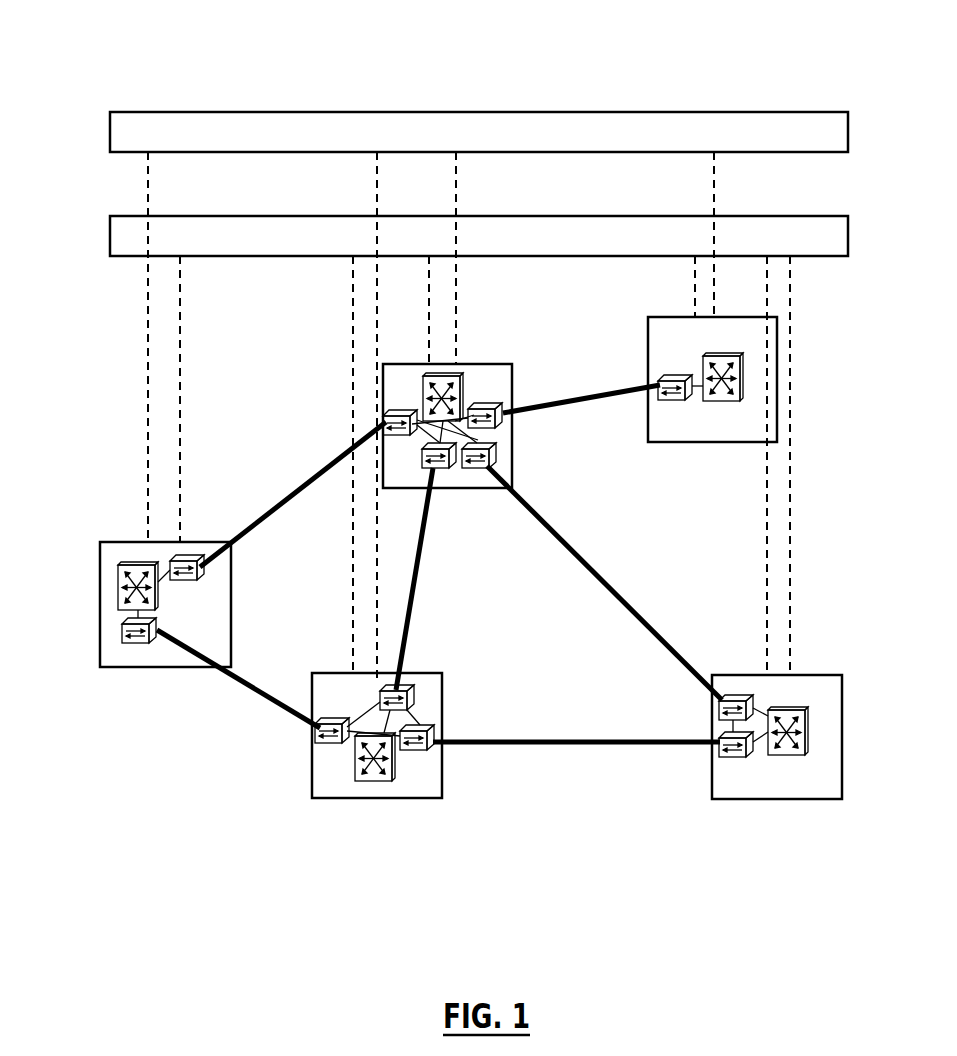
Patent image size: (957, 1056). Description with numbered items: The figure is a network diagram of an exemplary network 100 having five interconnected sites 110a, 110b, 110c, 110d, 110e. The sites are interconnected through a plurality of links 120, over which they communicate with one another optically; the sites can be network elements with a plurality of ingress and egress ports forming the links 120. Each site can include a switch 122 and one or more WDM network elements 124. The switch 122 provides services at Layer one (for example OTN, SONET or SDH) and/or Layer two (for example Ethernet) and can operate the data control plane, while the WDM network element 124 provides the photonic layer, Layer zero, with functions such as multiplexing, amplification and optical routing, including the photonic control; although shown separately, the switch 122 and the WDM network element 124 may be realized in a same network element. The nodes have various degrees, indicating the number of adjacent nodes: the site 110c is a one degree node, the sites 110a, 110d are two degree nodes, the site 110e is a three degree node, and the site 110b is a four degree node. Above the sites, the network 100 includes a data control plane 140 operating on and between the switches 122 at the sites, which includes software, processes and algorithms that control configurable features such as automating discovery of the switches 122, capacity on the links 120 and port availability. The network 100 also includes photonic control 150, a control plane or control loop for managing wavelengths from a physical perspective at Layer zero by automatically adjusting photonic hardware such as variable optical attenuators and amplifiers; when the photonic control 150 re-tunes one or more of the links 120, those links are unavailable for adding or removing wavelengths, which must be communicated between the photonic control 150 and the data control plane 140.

The network 100 is at (550, 44).
The photonic control 150 is at (612, 112).
The data control plane 140 is at (613, 216).
The site 110a is at (100, 636).
The site 110b is at (482, 364).
The site 110c is at (725, 388).
The site 110d is at (757, 799).
The site 110e is at (312, 778).
The links 120 is at (547, 398).
The switch 122 is at (728, 352).
The WDM network element 124 is at (678, 372).